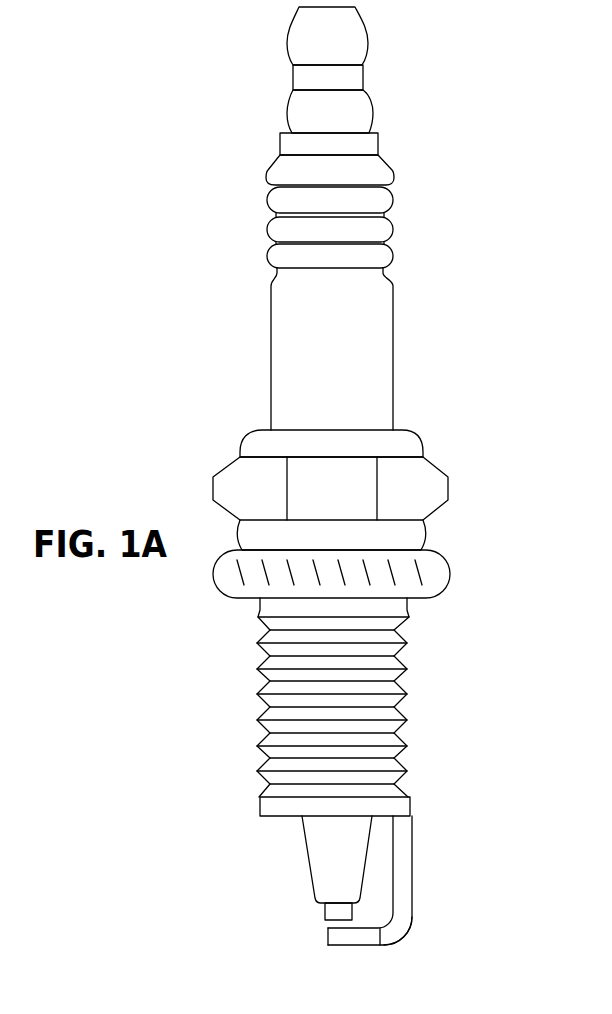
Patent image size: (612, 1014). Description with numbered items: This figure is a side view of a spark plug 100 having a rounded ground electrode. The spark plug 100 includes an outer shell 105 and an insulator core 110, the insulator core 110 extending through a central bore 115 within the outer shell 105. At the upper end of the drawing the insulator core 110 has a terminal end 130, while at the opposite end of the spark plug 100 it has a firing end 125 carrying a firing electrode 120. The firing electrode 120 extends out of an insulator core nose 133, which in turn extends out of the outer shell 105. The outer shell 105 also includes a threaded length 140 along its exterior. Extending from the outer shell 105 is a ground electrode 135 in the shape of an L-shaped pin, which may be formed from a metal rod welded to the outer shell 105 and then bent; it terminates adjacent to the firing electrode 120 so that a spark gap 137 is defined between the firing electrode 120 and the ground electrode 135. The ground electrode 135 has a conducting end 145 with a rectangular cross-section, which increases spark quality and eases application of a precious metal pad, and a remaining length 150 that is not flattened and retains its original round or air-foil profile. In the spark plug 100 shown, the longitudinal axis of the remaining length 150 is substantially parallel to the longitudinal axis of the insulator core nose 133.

The spark plug 100 is at (466, 110).
The terminal end 130 is at (280, 141).
The insulator core 110 is at (393, 340).
The central bore 115 is at (270, 430).
The outer shell 105 is at (425, 532).
The threaded length 140 is at (417, 697).
The firing end 125 is at (280, 817).
The insulator core nose 133 is at (302, 848).
The spark gap 137 is at (325, 922).
The remaining length 150 is at (418, 868).
The conducting end 145 is at (328, 935).
The firing electrode 120 is at (357, 915).
The ground electrode 135 is at (405, 936).